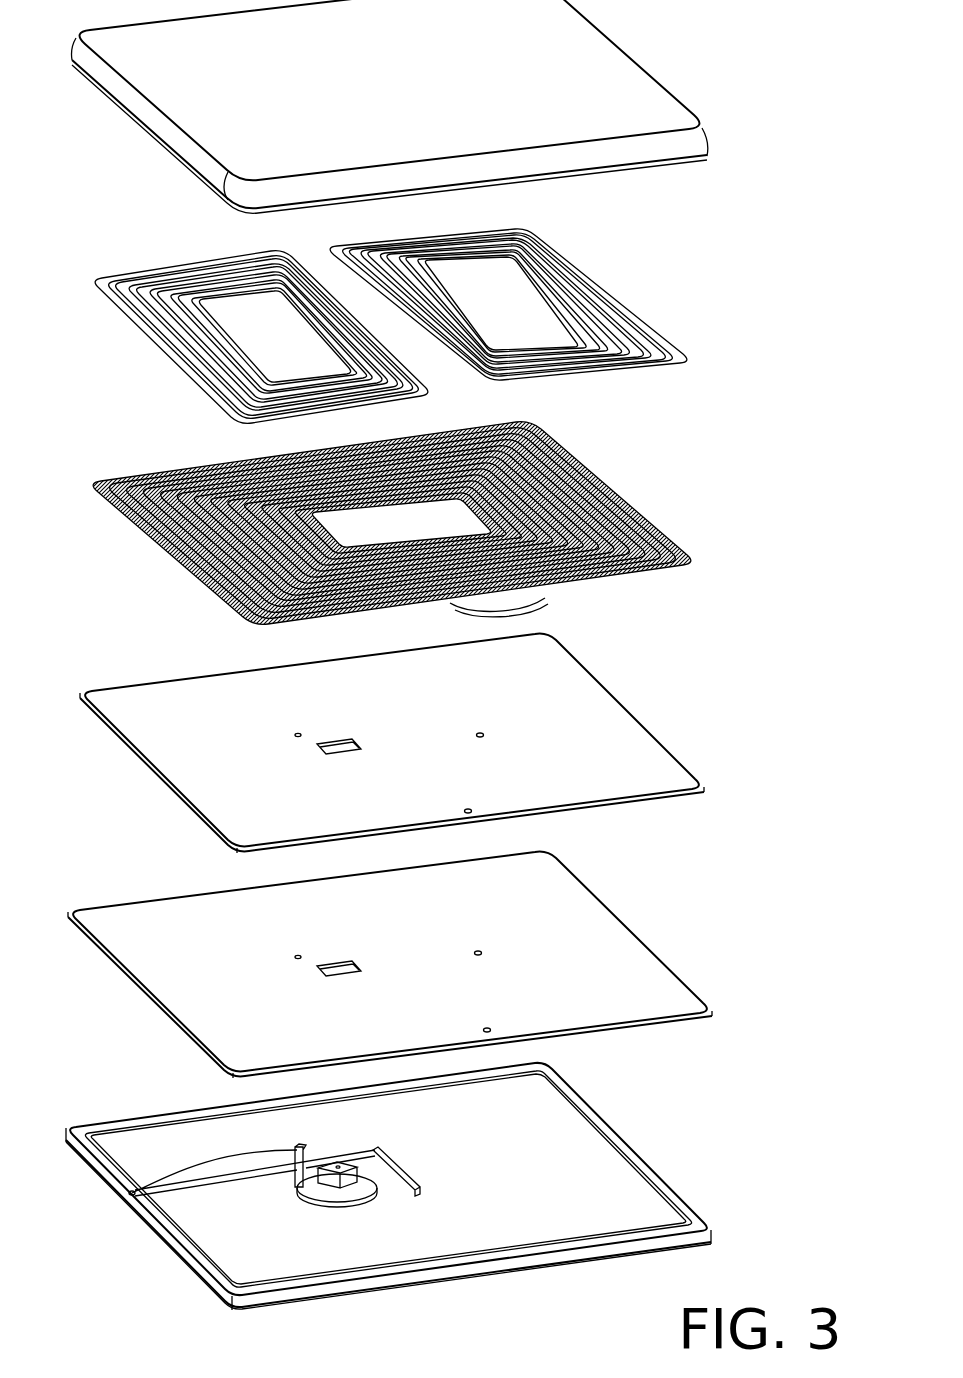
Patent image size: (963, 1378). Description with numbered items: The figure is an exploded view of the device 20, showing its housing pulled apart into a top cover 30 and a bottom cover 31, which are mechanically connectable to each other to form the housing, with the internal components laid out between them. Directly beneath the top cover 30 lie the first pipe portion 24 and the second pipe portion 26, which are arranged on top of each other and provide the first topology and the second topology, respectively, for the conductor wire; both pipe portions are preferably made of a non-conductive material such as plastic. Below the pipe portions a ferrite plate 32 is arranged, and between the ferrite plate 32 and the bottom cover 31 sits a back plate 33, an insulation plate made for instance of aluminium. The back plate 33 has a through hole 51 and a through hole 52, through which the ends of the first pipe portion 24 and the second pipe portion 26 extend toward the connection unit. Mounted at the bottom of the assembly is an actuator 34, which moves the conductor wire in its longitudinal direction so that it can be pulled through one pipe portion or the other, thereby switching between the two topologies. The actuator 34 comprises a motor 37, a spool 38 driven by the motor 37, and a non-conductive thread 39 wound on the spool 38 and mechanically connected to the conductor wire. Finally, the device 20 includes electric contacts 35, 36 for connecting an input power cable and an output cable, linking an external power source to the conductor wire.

The device 20 is at (788, 200).
The top cover 30 is at (637, 58).
The first pipe portion 24 is at (628, 300).
The second pipe portion 26 is at (630, 497).
The ferrite plate 32 is at (637, 713).
The back plate 33 is at (645, 930).
The through hole 51 is at (480, 735).
The through hole 52 is at (468, 811).
The bottom cover 31 is at (640, 1147).
The actuator 34 is at (340, 1228).
The first electric contact 35 is at (418, 1180).
The electric contact 36 is at (132, 1193).
The motor 37 is at (300, 1195).
The spool 38 is at (352, 1186).
The non-conductive thread 39 is at (318, 1200).